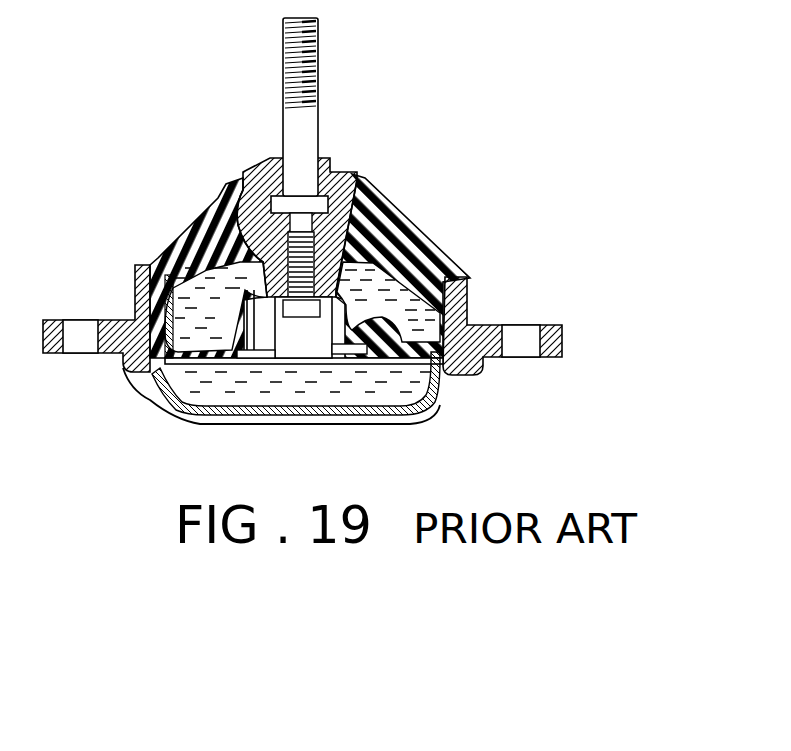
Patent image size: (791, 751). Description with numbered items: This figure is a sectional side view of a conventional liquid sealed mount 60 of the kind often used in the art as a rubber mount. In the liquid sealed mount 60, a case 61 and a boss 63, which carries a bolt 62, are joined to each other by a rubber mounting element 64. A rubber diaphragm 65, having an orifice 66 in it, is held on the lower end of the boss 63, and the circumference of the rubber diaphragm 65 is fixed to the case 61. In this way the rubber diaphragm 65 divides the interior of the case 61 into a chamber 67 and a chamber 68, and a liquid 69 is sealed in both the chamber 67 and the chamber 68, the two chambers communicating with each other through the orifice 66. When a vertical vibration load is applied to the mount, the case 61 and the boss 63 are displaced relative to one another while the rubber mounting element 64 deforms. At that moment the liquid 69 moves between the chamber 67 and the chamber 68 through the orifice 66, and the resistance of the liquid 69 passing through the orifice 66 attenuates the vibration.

The liquid sealed mount 60 is at (460, 123).
The case 61 is at (470, 297).
The bolt 62 is at (282, 50).
The boss 63 is at (258, 172).
The rubber mounting element 64 is at (185, 247).
The rubber diaphragm 65 is at (158, 373).
The orifice 66 is at (170, 408).
The chamber 67 is at (430, 407).
The chamber 68 is at (318, 387).
The liquid 69 is at (257, 387).